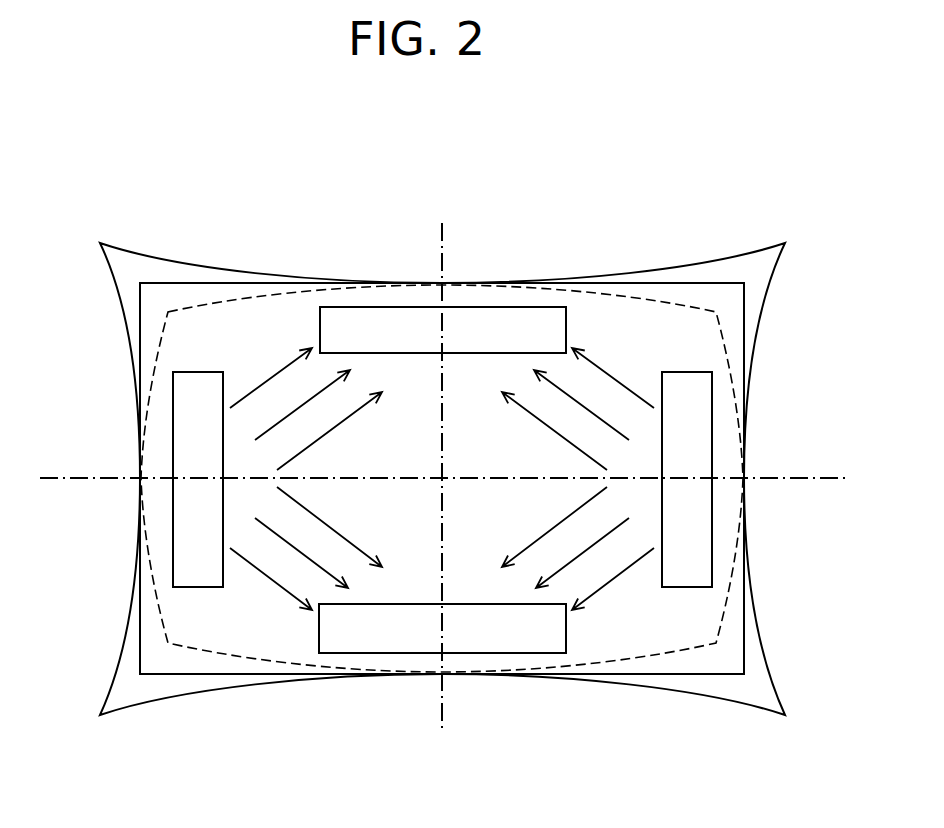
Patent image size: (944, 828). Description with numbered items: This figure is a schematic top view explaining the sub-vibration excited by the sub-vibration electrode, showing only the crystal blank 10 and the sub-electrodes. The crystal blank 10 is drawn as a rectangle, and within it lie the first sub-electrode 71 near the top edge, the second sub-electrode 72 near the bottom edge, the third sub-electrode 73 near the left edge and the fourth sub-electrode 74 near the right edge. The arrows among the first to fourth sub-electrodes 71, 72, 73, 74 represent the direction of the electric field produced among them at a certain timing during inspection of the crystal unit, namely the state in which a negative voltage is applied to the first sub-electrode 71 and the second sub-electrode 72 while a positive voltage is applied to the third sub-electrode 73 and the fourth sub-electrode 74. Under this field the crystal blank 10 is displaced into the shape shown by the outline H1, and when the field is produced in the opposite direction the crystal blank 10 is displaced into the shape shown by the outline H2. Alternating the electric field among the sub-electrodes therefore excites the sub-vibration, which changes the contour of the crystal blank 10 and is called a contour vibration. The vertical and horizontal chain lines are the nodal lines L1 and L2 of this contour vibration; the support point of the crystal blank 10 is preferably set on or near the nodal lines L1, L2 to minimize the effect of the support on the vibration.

The crystal blank 10 is at (262, 332).
The first sub-electrode 71 is at (378, 330).
The second sub-electrode 72 is at (376, 627).
The third sub-electrode 73 is at (192, 537).
The fourth sub-electrode 74 is at (692, 547).
The outline H1 is at (166, 266).
The outline H2 is at (162, 343).
The nodal line L1 is at (445, 268).
The nodal line L2 is at (45, 473).